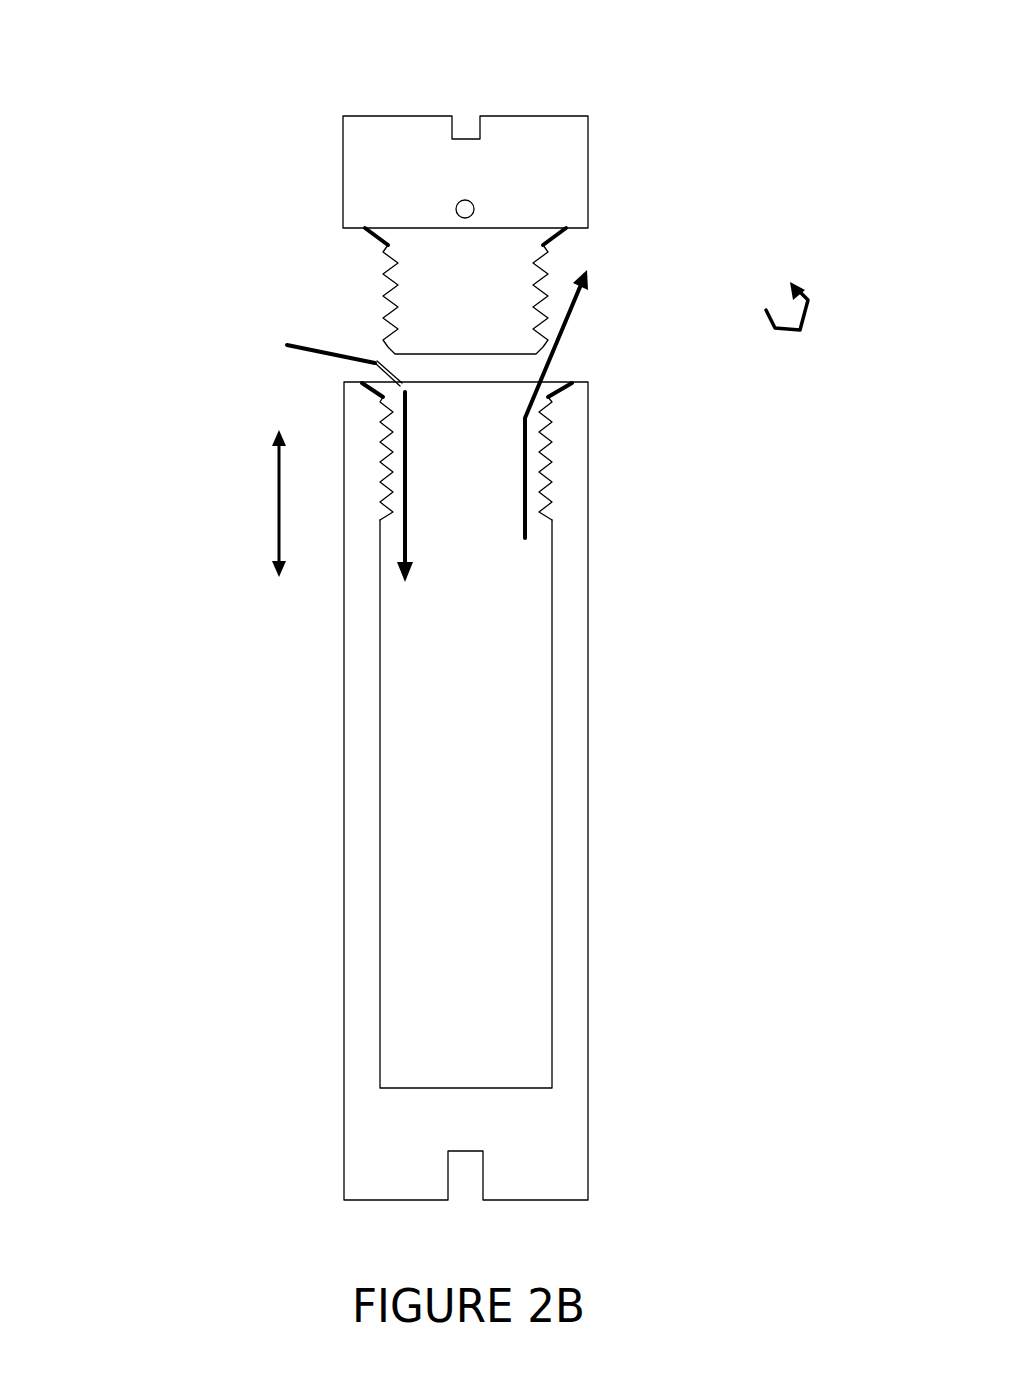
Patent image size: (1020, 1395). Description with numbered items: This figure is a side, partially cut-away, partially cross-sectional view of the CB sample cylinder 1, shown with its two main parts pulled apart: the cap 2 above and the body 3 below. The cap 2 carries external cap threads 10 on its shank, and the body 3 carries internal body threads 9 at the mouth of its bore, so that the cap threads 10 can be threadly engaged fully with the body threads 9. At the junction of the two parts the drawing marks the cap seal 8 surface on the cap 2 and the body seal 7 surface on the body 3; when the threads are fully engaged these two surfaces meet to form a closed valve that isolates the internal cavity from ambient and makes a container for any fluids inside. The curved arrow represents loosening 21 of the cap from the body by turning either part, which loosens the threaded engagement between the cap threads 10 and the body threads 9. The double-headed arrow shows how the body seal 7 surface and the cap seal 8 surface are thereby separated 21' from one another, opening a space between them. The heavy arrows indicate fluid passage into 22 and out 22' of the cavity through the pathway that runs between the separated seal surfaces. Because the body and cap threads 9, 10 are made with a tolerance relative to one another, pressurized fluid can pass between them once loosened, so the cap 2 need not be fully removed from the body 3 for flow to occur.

The CB sample cylinder 1 is at (590, 708).
The cap 2 is at (600, 168).
The body 3 is at (330, 738).
The body seal surface 7 is at (557, 378).
The cap seal surface 8 is at (370, 240).
The body threads 9 is at (568, 480).
The cap threads 10 is at (387, 332).
The loosening 21 is at (808, 377).
The separation of seal surfaces 21' is at (187, 503).
The fluid passage into cavity 22 is at (236, 361).
The fluid passage out of cavity 22' is at (686, 324).